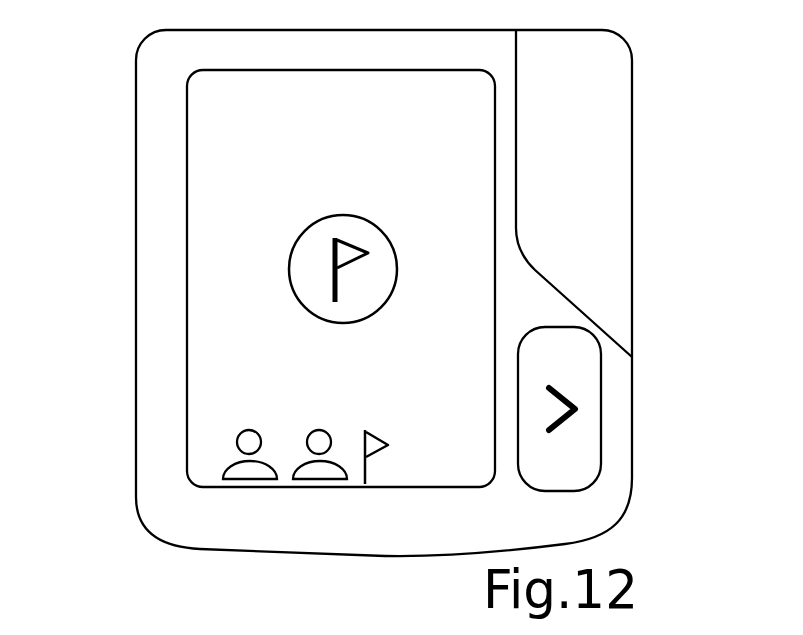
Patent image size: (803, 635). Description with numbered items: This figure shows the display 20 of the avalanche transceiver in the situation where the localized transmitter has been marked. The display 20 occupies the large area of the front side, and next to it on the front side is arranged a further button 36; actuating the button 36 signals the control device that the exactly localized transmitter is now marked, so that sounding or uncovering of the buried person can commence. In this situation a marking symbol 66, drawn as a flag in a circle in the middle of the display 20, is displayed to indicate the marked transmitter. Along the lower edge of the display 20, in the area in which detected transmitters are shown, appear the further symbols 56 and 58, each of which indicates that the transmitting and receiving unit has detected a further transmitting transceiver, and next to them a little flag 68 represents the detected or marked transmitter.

The display 20 is at (223, 172).
The button 36 is at (575, 370).
The further symbol 56 is at (255, 472).
The further symbol 58 is at (322, 472).
The marking symbol 66 is at (368, 233).
The little flag 68 is at (365, 484).